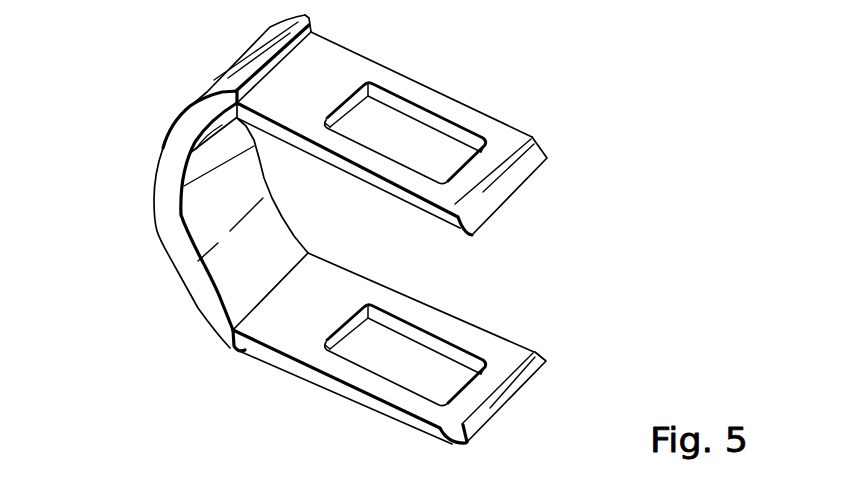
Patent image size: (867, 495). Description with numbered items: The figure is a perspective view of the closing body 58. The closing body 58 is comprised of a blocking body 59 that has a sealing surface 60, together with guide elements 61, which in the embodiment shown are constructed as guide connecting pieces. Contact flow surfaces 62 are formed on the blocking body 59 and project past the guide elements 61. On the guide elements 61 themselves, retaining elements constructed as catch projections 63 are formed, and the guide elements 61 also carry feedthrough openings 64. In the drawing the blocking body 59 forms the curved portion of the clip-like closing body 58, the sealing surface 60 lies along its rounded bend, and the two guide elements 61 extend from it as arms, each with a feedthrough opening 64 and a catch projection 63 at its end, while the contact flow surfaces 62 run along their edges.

The closing body 58 is at (129, 146).
The blocking body 59 is at (167, 224).
The sealing surface 60 is at (221, 66).
The guide elements 61 is at (338, 74).
The contact flow surfaces 62 is at (308, 34).
The catch projections 63 is at (527, 156).
The feedthrough openings 64 is at (416, 134).